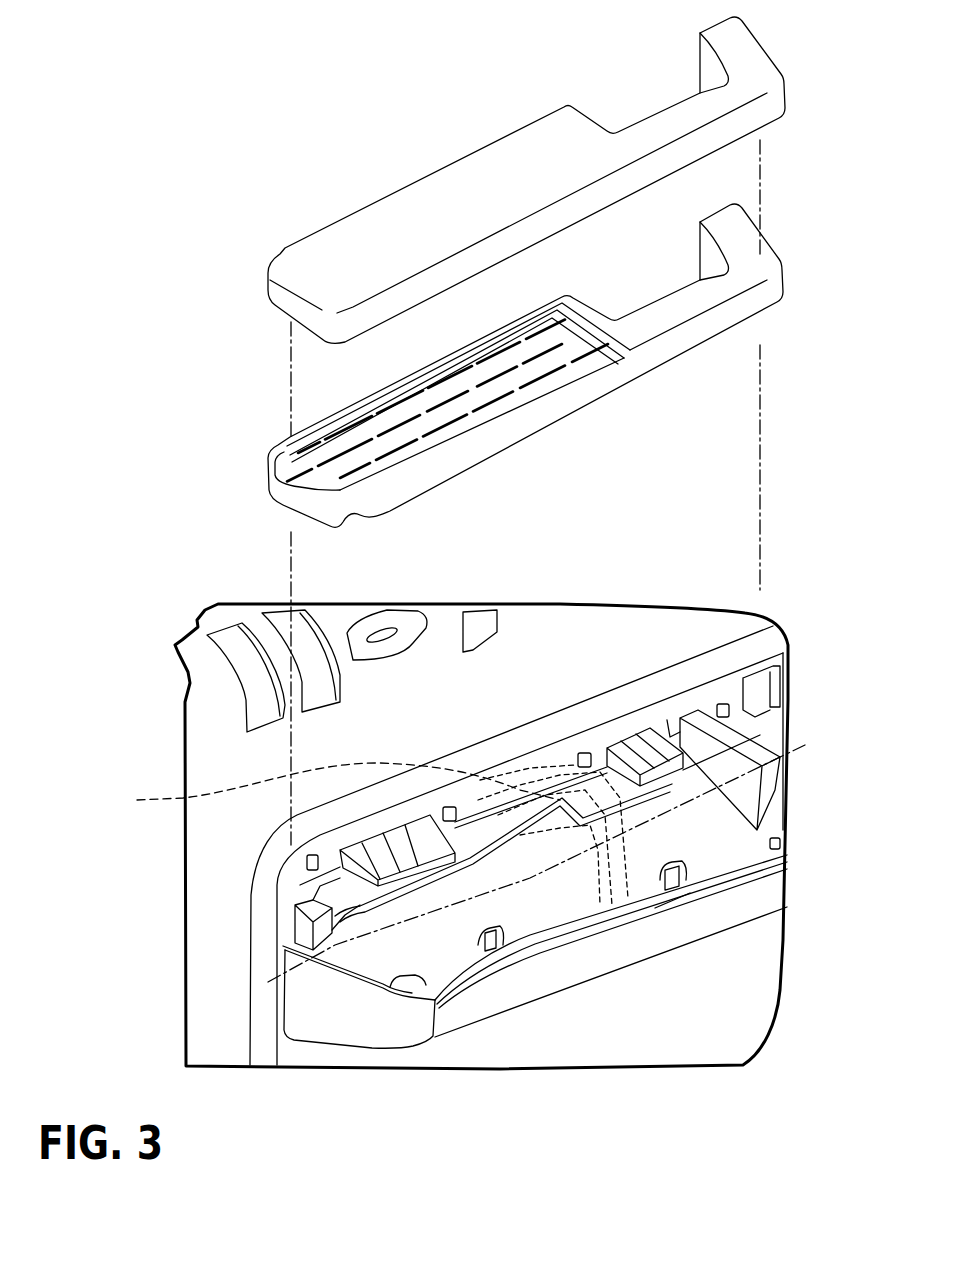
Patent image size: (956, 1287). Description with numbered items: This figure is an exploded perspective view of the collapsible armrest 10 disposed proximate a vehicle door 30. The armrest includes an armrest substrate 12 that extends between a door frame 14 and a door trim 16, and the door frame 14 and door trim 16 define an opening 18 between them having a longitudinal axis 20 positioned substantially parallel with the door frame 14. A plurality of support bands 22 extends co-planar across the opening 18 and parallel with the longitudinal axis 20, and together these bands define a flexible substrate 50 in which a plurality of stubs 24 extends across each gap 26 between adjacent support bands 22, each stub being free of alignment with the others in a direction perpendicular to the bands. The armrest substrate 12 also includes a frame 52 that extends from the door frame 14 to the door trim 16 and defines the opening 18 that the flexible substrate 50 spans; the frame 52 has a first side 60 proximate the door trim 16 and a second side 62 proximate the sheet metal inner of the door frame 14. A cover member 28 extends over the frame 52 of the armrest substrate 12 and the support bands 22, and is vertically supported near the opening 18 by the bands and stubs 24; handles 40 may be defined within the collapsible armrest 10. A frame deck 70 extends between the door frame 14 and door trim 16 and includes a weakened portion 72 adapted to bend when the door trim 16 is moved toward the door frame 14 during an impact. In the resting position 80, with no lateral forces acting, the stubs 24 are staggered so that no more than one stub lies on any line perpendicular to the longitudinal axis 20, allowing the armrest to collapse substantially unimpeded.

The collapsible armrest 10 is at (835, 428).
The armrest substrate 12 is at (499, 417).
The door frame 14 is at (292, 881).
The door trim 16 is at (493, 1000).
The opening 18 is at (714, 828).
The longitudinal axis 20 is at (760, 745).
The support bands 22 is at (320, 463).
The stubs 24 is at (423, 438).
The gaps 26 is at (553, 375).
The cover member 28 is at (355, 247).
The vehicle door 30 is at (166, 749).
The handles 40 is at (645, 122).
The flexible substrate 50 is at (497, 314).
The frame 52 is at (545, 417).
The first side 60 is at (402, 483).
The second side 62 is at (370, 398).
The frame deck 70 is at (332, 787).
The weakened portion 72 is at (662, 914).
The resting position 80 is at (391, 1055).